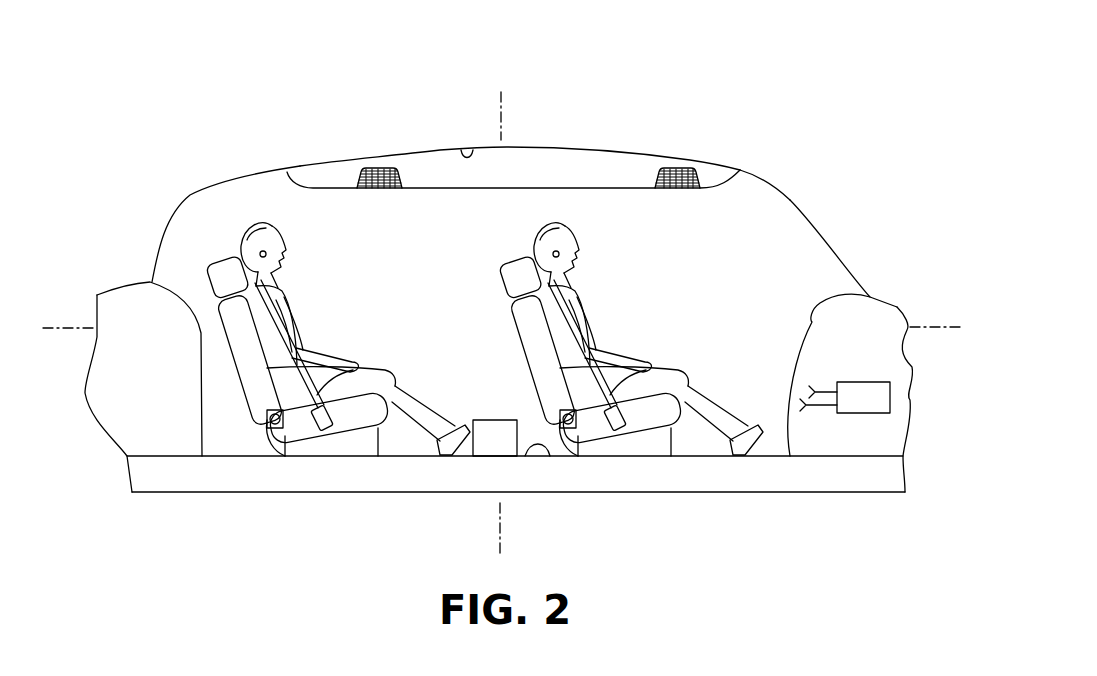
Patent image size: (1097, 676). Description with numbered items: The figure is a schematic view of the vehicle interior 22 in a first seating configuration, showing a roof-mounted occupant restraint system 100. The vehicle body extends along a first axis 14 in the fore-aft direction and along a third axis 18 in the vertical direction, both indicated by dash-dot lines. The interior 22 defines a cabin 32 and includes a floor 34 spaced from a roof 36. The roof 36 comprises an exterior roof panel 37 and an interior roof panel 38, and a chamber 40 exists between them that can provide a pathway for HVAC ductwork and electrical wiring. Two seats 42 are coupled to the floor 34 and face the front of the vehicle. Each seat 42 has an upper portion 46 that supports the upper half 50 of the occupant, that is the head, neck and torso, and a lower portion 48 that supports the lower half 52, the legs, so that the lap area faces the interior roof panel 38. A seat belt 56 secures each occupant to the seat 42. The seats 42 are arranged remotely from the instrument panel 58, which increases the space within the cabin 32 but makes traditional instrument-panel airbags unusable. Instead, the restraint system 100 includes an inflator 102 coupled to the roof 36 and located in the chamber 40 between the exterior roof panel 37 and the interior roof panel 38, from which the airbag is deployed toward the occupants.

The first axis 14 is at (918, 324).
The third axis 18 is at (503, 127).
The interior 22 is at (763, 200).
The cabin 32 is at (223, 217).
The floor 34 is at (548, 444).
The roof 36 is at (390, 122).
The exterior roof panel 37 is at (466, 152).
The interior roof panel 38 is at (465, 190).
The chamber 40 is at (577, 163).
The seat 42 is at (383, 442).
The upper portion 46 is at (240, 355).
The lower portion 48 is at (350, 426).
The upper half 50 is at (502, 339).
The lower half 52 is at (382, 353).
The seat belt 56 is at (325, 388).
The instrument panel 58 is at (818, 300).
The roof-mounted occupant restraint system 100 is at (347, 177).
The inflator 102 is at (383, 190).